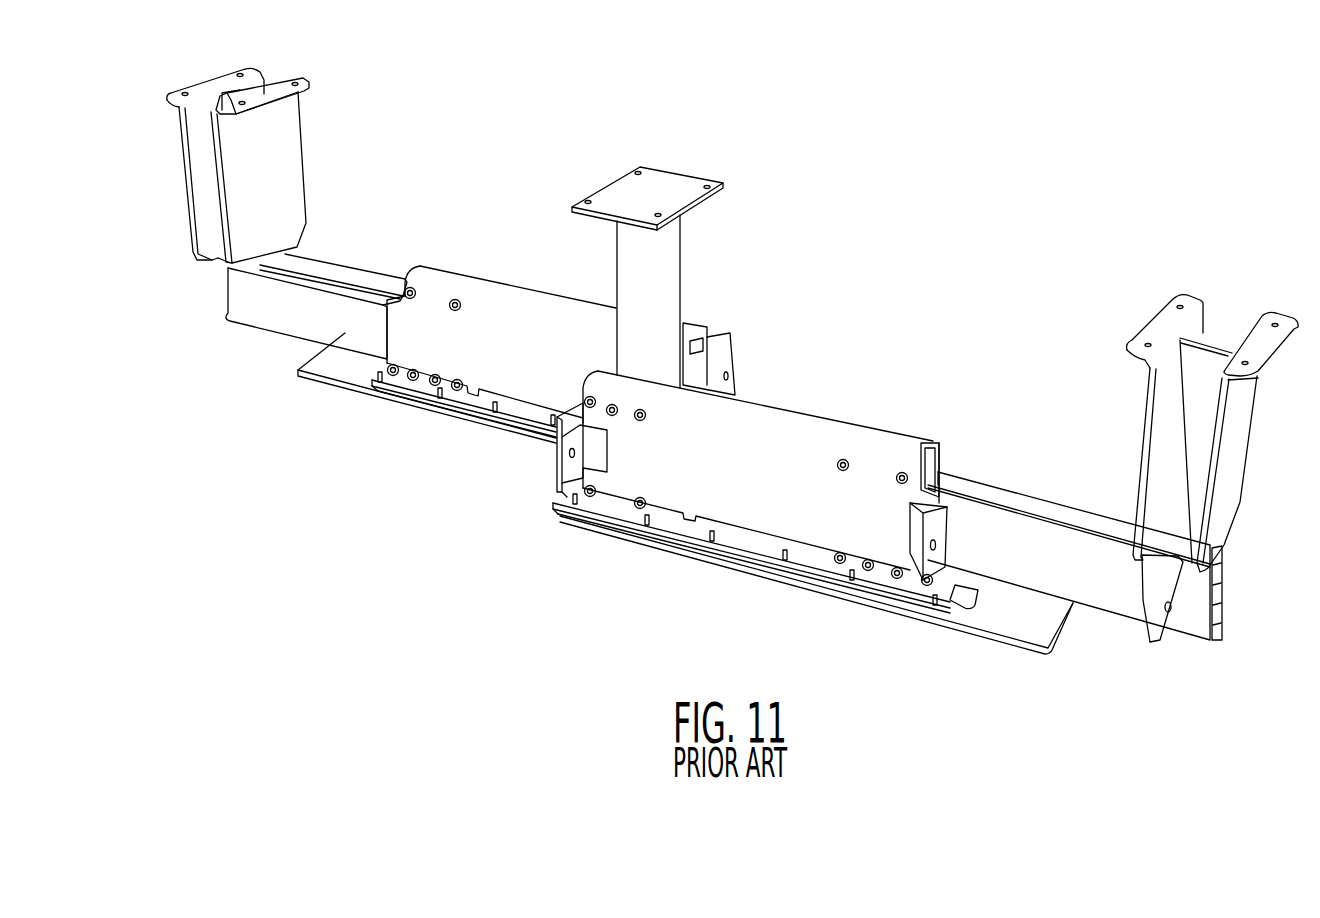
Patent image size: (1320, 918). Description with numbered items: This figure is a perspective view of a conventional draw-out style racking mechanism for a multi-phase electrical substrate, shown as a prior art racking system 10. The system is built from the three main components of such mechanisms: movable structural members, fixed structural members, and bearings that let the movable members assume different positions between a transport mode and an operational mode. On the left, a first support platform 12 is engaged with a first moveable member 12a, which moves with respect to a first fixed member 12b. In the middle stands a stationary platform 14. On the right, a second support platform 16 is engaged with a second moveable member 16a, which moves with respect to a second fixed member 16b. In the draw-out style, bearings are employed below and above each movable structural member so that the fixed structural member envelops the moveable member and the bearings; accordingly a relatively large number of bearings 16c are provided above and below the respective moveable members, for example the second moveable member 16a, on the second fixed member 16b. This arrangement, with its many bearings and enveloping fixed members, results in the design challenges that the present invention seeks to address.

The prior art racking system 10 is at (960, 190).
The first support platform 12 is at (303, 154).
The first moveable member 12a is at (280, 310).
The first fixed member 12b is at (530, 373).
The stationary platform 14 is at (667, 273).
The second support platform 16 is at (1238, 428).
The second moveable member 16a is at (1110, 580).
The second fixed member 16b is at (770, 503).
The bearings 16c is at (903, 473).